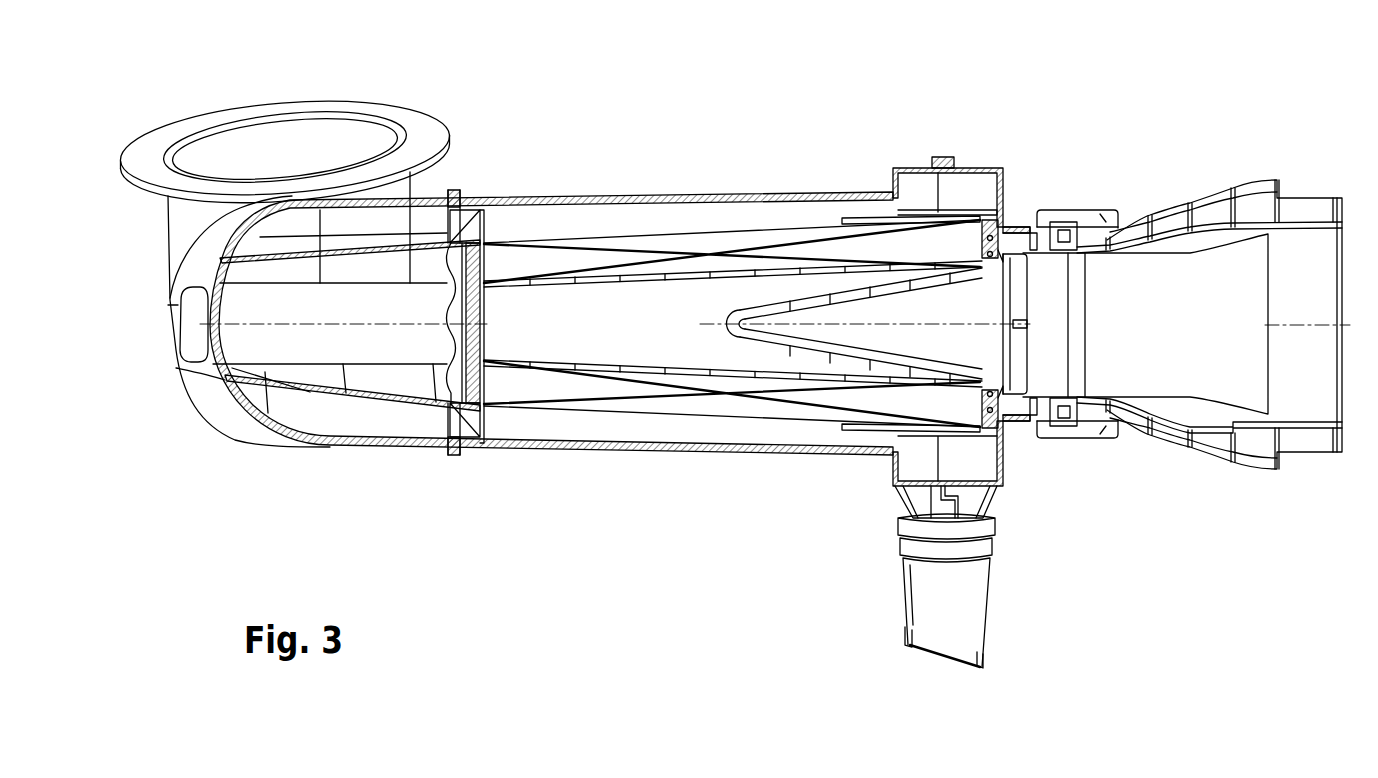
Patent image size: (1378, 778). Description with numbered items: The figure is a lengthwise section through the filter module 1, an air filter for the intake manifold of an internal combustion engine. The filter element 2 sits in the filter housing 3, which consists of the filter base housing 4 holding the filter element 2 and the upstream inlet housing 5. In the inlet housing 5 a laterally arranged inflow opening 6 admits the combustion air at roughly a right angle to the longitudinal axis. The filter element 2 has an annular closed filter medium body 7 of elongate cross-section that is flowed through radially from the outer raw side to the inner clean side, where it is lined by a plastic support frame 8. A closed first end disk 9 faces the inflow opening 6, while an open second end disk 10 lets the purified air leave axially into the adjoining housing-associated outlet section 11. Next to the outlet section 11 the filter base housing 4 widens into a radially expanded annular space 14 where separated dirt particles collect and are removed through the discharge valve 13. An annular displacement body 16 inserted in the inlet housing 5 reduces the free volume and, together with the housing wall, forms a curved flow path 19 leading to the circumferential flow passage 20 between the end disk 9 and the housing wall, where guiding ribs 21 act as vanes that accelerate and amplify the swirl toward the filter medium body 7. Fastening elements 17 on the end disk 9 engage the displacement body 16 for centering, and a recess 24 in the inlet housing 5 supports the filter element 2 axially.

The filter module 1 is at (768, 76).
The filter element 2 is at (557, 238).
The filter housing 3 is at (635, 195).
The filter base housing 4 is at (702, 198).
The inlet housing 5 is at (170, 230).
The inflow opening 6 is at (297, 134).
The filter medium body 7 is at (647, 405).
The support frame 8 is at (710, 371).
The first end disk 9 is at (475, 380).
The second end disk 10 is at (974, 243).
The outlet section 11 is at (1247, 458).
The discharge valve 13 is at (972, 610).
The radially expanded annular space 14 is at (972, 478).
The displacement body 16 is at (372, 400).
The fastening elements 17 is at (450, 383).
The flow path 19 is at (378, 226).
The flow passage 20 is at (440, 222).
The guiding ribs 21 is at (468, 218).
The recess 24 is at (190, 341).